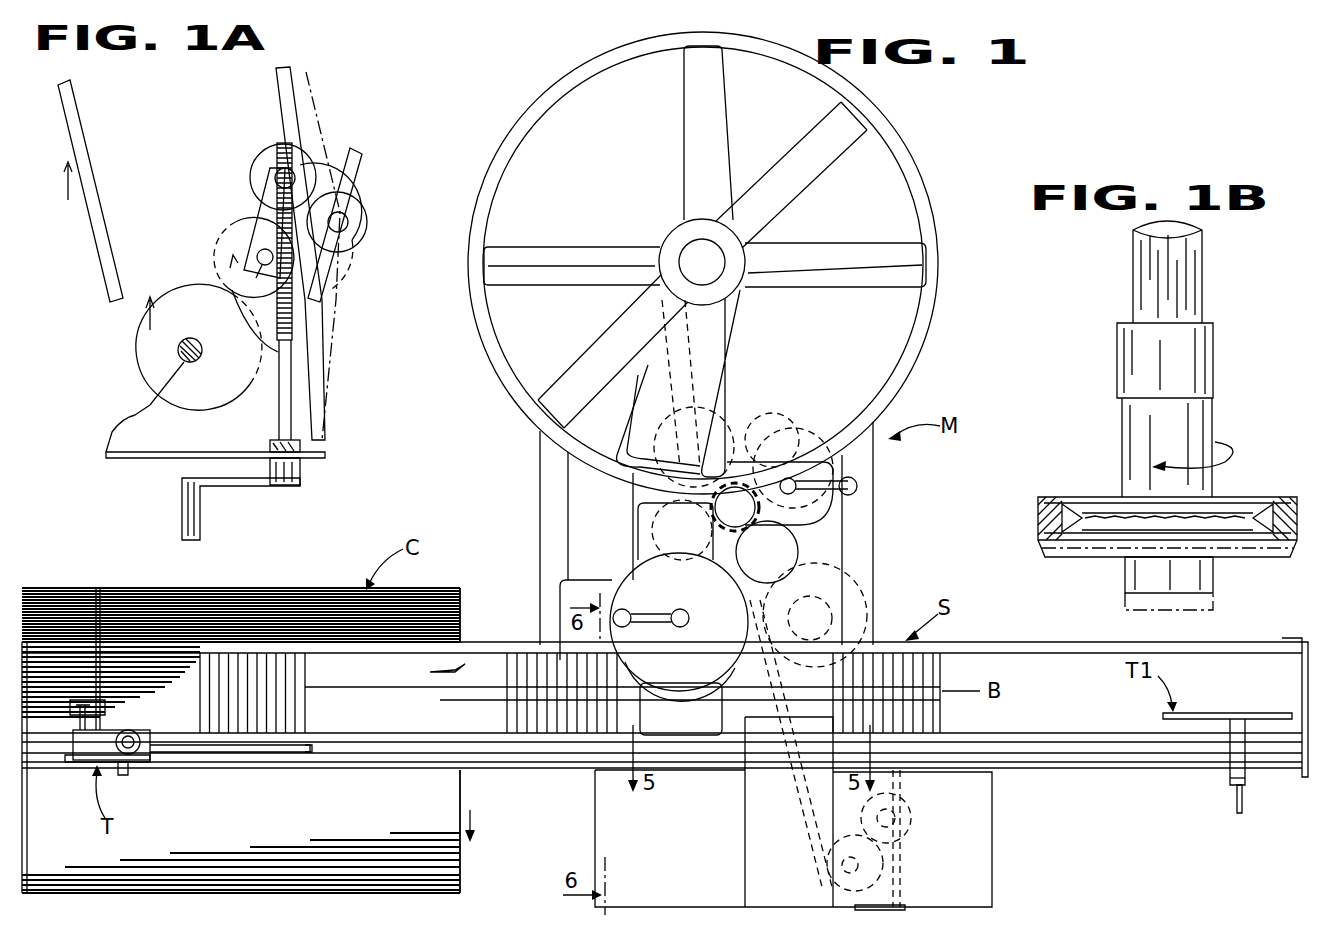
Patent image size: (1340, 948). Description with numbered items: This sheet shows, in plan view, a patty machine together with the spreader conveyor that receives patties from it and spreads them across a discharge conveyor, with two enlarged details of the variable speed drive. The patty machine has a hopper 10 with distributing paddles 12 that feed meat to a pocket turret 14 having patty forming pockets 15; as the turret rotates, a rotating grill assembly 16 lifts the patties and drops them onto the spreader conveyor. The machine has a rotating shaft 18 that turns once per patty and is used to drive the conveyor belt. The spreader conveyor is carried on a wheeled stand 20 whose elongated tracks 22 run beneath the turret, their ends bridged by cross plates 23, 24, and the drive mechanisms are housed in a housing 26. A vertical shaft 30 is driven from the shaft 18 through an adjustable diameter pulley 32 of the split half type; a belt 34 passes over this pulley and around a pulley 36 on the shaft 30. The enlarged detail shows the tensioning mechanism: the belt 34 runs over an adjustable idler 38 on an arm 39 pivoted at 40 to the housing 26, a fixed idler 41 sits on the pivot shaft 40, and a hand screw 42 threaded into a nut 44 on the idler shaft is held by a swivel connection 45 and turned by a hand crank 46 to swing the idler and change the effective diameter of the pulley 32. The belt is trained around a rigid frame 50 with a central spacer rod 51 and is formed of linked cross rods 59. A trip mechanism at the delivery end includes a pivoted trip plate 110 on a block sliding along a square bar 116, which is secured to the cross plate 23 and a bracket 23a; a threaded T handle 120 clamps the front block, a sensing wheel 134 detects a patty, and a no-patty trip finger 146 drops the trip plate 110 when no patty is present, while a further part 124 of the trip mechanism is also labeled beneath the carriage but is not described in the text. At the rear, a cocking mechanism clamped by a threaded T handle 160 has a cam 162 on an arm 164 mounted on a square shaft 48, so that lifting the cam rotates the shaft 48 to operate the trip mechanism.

In FIG. 1, the hopper 10 is at (919, 143).
In FIG. 1, the distributing paddles 12 is at (655, 238).
In FIG. 1, the pocket turret 14 is at (833, 505).
In FIG. 1, the patty forming pockets 15 is at (735, 437).
In FIG. 1, the rotating grill assembly 16 is at (568, 582).
In FIG. 1, the rotating shaft 18 is at (801, 594).
In FIG. 1B, the rotating shaft 18 is at (1202, 254).
In FIG. 1, the wheeled stand 20 is at (540, 501).
In FIG. 1, the elongated tracks 22 is at (413, 645).
In FIG. 1, the cross plate 23 is at (22, 786).
In FIG. 1, the bracket 23a is at (315, 754).
In FIG. 1, the cross plate 24 is at (1305, 640).
In FIG. 1A, the housing 26 is at (323, 383).
In FIG. 1, the housing 26 is at (992, 816).
In FIG. 1A, the vertical shaft 30 is at (196, 360).
In FIG. 1, the vertical shaft 30 is at (842, 876).
In FIG. 1, the adjustable diameter pulley 32 is at (845, 588).
In FIG. 1B, the adjustable diameter pulley 32 is at (1086, 497).
In FIG. 1A, the belt 34 is at (108, 284).
In FIG. 1, the belt 34 is at (805, 775).
In FIG. 1B, the belt 34 is at (1038, 518).
In FIG. 1A, the pulley 36 is at (147, 336).
In FIG. 1, the pulley 36 is at (830, 833).
In FIG. 1A, the adjustable idler 38 is at (302, 164).
In FIG. 1, the adjustable idler 38 is at (905, 780).
In FIG. 1A, the arm 39 is at (265, 200).
In FIG. 1, the arm 39 is at (905, 803).
In FIG. 1A, the pivot 40 is at (258, 268).
In FIG. 1, the pivot 40 is at (905, 823).
In FIG. 1A, the fixed idler 41 is at (243, 219).
In FIG. 1, the fixed idler 41 is at (905, 838).
In FIG. 1A, the hand screw 42 is at (288, 342).
In FIG. 1, the hand screw 42 is at (905, 857).
In FIG. 1A, the nut 44 is at (275, 174).
In FIG. 1A, the swivel connection 45 is at (300, 446).
In FIG. 1A, the hand crank 46 is at (203, 502).
In FIG. 1, the hand crank 46 is at (885, 904).
In FIG. 1, the square shaft 48 is at (500, 770).
In FIG. 1, the rigid frame 50 is at (438, 703).
In FIG. 1, the spacer rod 51 is at (455, 700).
In FIG. 1, the cross rods 59 is at (305, 672).
In FIG. 1, the trip plate 110 is at (145, 762).
In FIG. 1, the square bar 116 is at (250, 752).
In FIG. 1, the threaded T handle 120 is at (241, 728).
In FIG. 1, the foot 124 is at (128, 778).
In FIG. 1, the sensing wheel 134 is at (105, 706).
In FIG. 1, the no-patty trip finger 146 is at (72, 763).
In FIG. 1, the threaded T handle 160 is at (1236, 801).
In FIG. 1, the cam 162 is at (1238, 713).
In FIG. 1, the arm 164 is at (1228, 781).